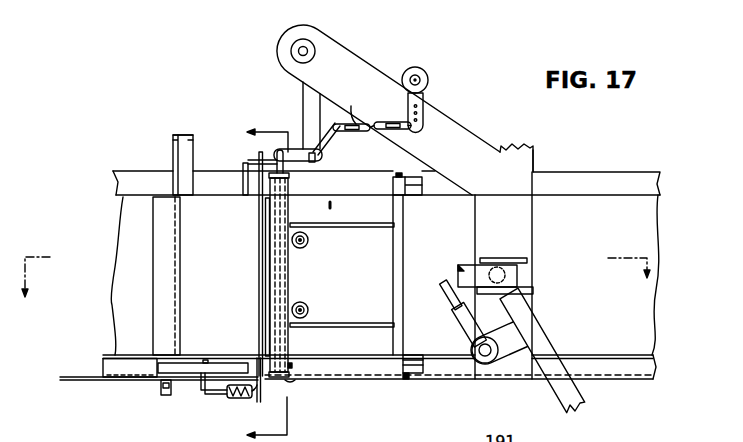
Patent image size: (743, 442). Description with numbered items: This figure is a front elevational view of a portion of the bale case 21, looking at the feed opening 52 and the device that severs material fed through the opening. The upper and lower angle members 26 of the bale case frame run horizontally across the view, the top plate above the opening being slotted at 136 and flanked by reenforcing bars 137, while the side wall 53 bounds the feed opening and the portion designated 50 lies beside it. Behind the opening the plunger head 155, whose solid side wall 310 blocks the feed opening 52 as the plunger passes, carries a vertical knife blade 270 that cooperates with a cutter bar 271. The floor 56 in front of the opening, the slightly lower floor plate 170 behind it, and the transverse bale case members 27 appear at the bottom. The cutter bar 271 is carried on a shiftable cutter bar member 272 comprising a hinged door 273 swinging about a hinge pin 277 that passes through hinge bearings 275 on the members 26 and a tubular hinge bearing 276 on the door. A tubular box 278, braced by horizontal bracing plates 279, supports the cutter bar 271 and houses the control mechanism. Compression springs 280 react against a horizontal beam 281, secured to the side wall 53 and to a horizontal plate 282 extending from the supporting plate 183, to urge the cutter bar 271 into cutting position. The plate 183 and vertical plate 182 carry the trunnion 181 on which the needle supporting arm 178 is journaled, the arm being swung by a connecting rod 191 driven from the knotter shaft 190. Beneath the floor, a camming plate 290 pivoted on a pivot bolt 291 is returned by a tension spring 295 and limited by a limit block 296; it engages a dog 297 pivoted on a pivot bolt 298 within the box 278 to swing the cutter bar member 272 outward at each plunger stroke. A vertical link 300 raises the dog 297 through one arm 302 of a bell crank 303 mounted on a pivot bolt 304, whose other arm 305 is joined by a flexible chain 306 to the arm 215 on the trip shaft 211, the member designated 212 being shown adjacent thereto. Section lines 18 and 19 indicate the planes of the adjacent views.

The section line 18 is at (336, 283).
The section line 19 is at (253, 280).
The bale case 21 is at (546, 170).
The angle members 26 is at (145, 178).
The transverse bale case members 27 is at (160, 393).
The assembly 50 is at (448, 240).
The feed opening 52 is at (228, 262).
The side wall 53 is at (259, 210).
The floor 56 is at (188, 356).
The slots 136 is at (185, 165).
The reenforcing bars 137 is at (175, 133).
The plunger head 155 is at (118, 243).
The floor plate 170 is at (70, 375).
The supporting arm 178 is at (543, 351).
The trunnions 181 is at (517, 277).
The vertical plates 182 is at (512, 365).
The plate 183 is at (515, 230).
The knotter shaft 190 is at (309, 46).
The connecting rods 191 is at (447, 299).
The trip shaft 211 is at (420, 77).
The arm 212 is at (436, 124).
The arm 215 is at (408, 101).
The knife blade 270 is at (168, 235).
The cutter bar 271 is at (266, 279).
The cutter bar member 272 is at (331, 202).
The hinged panel 273 is at (352, 233).
The hinge bearings 275 is at (401, 183).
The tubular hinge bearing 276 is at (395, 278).
The hinge pin 277 is at (402, 381).
The box 278 is at (270, 181).
The bracing plates 279 is at (332, 228).
The compression springs 280 is at (301, 301).
The horizontal beam 281 is at (460, 272).
The horizontal plate 282 is at (510, 262).
The camming plate 290 is at (220, 372).
The pivot bolt 291 is at (166, 396).
The tension spring 295 is at (241, 398).
The limit block 296 is at (203, 390).
The dog 297 is at (288, 382).
The pivot bolt 298 is at (291, 364).
The vertical link 300 is at (277, 162).
The arm 302 is at (283, 150).
The bell crank 303 is at (313, 141).
The pivot bolt 304 is at (316, 159).
The arm 305 is at (332, 137).
The flexible chain 306 is at (351, 106).
The solid side wall 310 is at (130, 210).